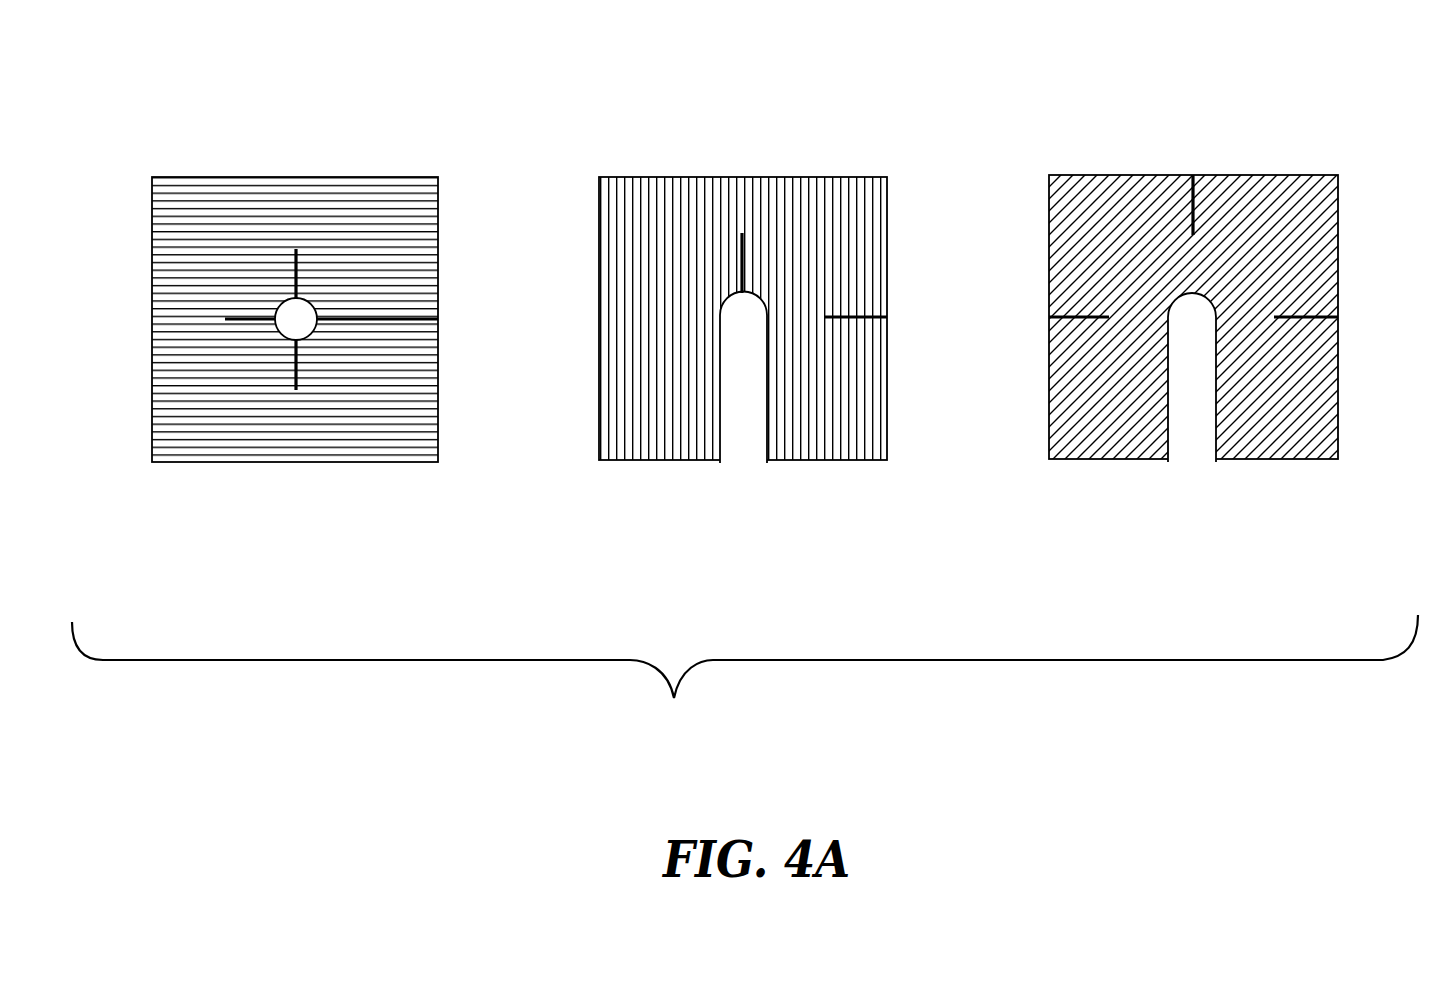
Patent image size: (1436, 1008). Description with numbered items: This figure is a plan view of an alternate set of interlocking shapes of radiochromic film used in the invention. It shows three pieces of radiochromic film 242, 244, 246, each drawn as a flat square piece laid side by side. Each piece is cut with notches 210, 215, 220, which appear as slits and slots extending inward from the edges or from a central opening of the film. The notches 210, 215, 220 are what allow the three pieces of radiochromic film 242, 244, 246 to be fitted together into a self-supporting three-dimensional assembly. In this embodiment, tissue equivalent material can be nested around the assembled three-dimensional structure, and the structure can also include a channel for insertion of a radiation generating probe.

The radiochromic film 246 is at (215, 178).
The radiochromic film 244 is at (685, 178).
The radiochromic film 242 is at (1150, 177).
The notch 210 is at (367, 322).
The notch 215 is at (295, 278).
The notch 220 is at (830, 322).